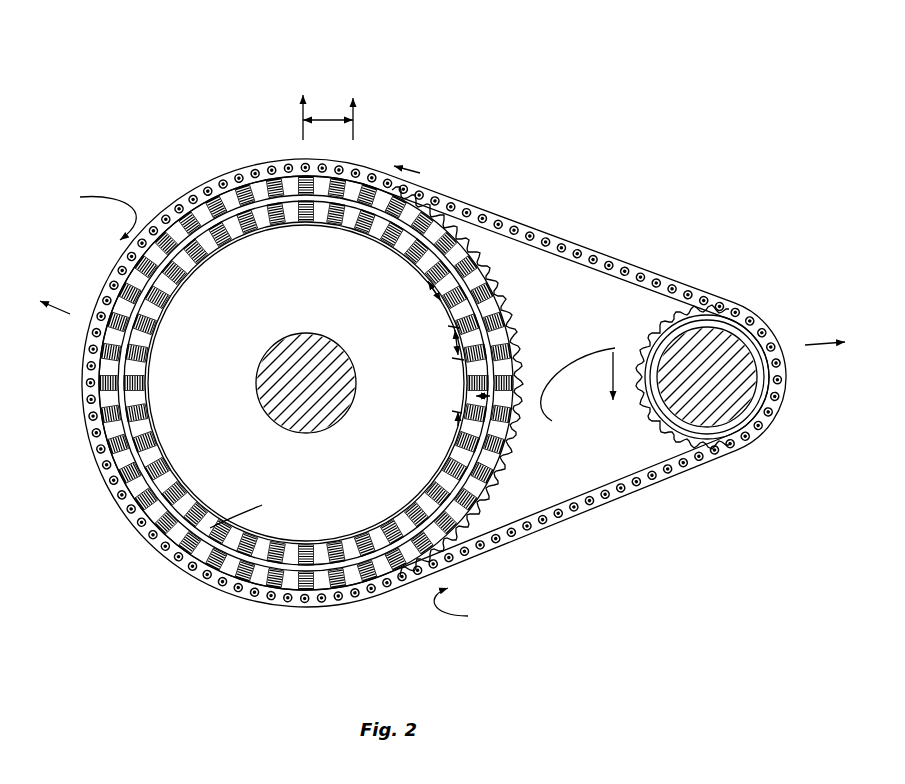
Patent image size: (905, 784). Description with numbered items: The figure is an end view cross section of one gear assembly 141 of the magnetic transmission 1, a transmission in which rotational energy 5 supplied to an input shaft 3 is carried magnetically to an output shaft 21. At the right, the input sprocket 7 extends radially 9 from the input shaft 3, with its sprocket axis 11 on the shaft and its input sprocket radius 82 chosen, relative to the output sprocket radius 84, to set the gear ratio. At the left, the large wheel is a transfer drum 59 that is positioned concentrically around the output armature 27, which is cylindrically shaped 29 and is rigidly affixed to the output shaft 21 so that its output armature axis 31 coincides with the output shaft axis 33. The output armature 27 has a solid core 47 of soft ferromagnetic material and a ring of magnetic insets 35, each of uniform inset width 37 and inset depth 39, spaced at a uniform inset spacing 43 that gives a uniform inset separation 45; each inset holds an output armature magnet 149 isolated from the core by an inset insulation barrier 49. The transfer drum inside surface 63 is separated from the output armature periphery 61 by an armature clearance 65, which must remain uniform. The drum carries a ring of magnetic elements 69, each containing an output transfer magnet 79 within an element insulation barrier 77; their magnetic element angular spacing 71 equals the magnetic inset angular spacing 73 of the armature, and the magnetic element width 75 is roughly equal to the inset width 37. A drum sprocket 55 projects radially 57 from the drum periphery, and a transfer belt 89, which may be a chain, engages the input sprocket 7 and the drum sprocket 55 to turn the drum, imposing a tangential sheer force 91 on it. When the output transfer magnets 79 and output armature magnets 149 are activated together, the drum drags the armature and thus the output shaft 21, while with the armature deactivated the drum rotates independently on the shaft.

The magnetic transmission 1 is at (246, 599).
The input shaft 3 is at (740, 328).
The rotational energy 5 is at (578, 389).
The input sprocket 7 is at (704, 375).
The radial extension of input sprockets 9 is at (805, 348).
The sprocket axis 11 is at (717, 440).
The output shaft 21 is at (217, 186).
The output armature 27 is at (197, 558).
The cylindrical shape of output armature 29 is at (158, 531).
The output armature axis 31 is at (257, 362).
The output shaft axis 33 is at (420, 209).
The magnetic inset 35 is at (436, 480).
The inset width 37 is at (447, 446).
The inset depth 39 is at (477, 392).
The inset spacing 43 is at (430, 288).
The inset separation 45 is at (452, 327).
The core 47 is at (112, 492).
The inset insulation barrier 49 is at (292, 549).
The drum sprocket 55 is at (512, 302).
The radial projection of drum sprocket 57 is at (58, 312).
The transfer drum 59 is at (92, 398).
The output armature periphery 61 is at (92, 460).
The transfer drum inside surface 63 is at (111, 263).
The armature clearance 65 is at (258, 184).
The magnetic element 69 is at (293, 190).
The magnetic element angular spacing 71 is at (323, 118).
The magnetic inset angular spacing 73 is at (345, 170).
The magnetic element width 75 is at (355, 182).
The element insulation barrier 77 is at (270, 186).
The output transfer magnet 79 is at (300, 184).
The input sprocket radius 82 is at (717, 440).
The output sprocket radius 84 is at (253, 188).
The transfer belt 89 is at (566, 240).
The tangential sheer force 91 is at (414, 165).
The gear assembly 141 is at (259, 608).
The output armature magnet 149 is at (446, 455).